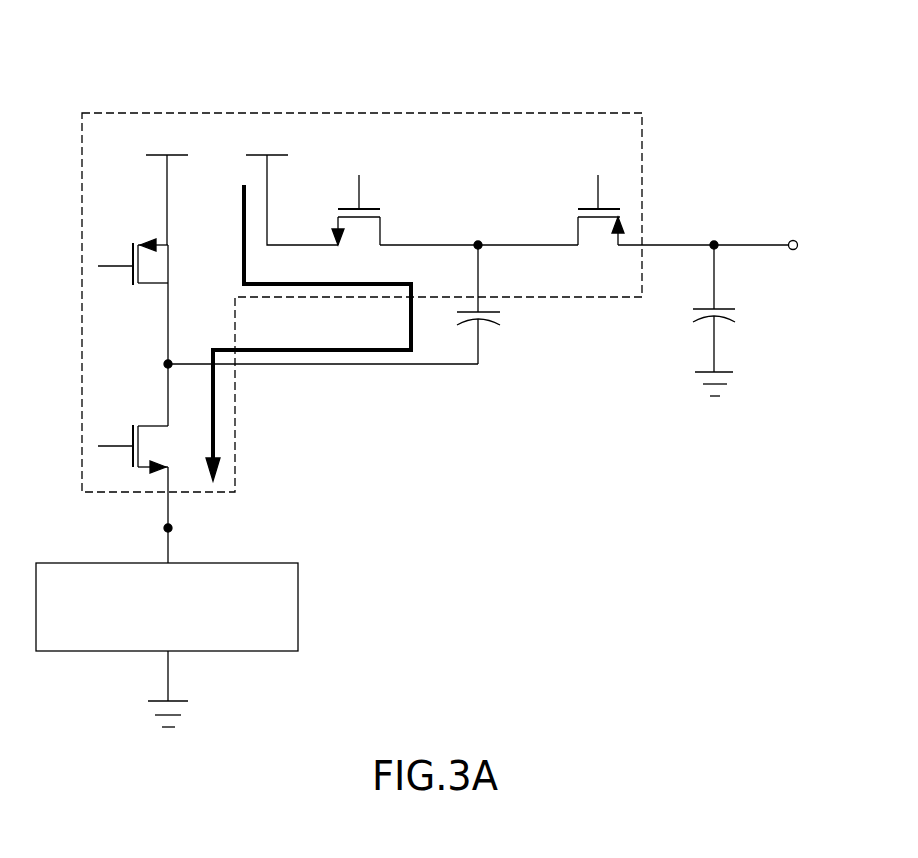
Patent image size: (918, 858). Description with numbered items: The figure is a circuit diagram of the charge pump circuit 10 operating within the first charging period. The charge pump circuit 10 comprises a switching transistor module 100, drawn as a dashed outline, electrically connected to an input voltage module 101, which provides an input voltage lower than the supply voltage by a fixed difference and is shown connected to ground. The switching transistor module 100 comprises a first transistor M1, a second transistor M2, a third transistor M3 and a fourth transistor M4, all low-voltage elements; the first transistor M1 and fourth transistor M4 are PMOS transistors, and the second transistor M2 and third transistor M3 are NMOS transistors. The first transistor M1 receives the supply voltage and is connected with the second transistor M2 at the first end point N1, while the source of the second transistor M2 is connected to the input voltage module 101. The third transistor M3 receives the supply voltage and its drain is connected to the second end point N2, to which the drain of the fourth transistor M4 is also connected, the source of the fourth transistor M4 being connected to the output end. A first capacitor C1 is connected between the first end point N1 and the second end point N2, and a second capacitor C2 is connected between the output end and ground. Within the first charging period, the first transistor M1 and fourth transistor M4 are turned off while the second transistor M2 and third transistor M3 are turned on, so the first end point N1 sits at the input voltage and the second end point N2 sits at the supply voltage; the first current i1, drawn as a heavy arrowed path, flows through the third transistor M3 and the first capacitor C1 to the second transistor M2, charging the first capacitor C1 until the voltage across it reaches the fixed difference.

The charge pump circuit 10 is at (110, 37).
The switching transistor module 100 is at (642, 160).
The input voltage module 101 is at (298, 608).
The first transistor M1 is at (149, 262).
The second transistor M2 is at (149, 449).
The third transistor M3 is at (356, 226).
The fourth transistor M4 is at (601, 226).
The first capacitor C1 is at (461, 304).
The second capacitor C2 is at (697, 320).
The first end point N1 is at (305, 364).
The second end point N2 is at (478, 229).
The first current i1 is at (244, 215).